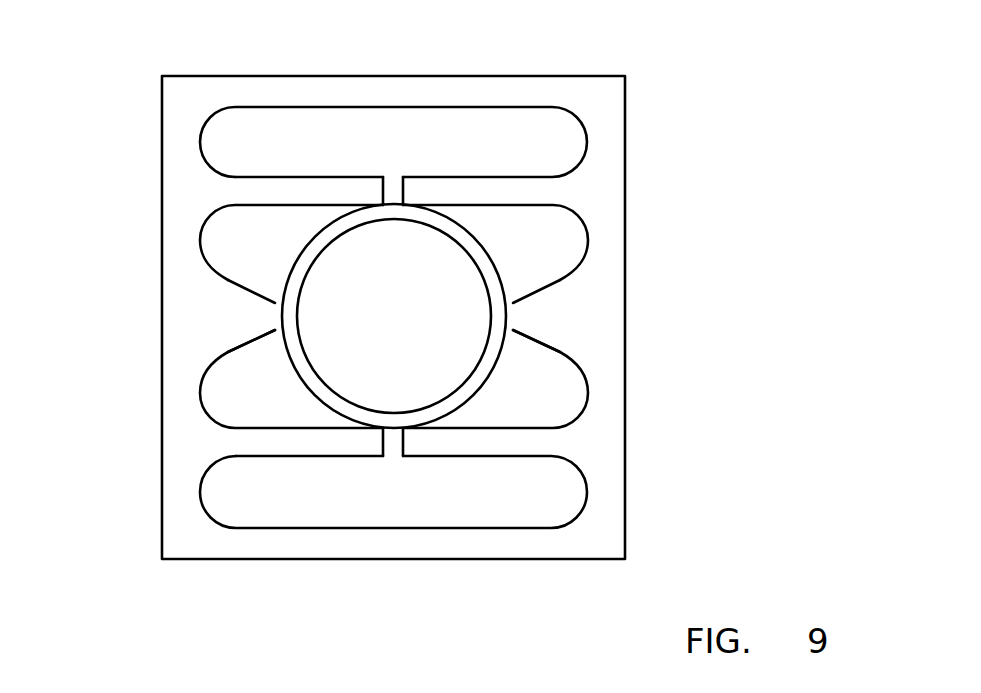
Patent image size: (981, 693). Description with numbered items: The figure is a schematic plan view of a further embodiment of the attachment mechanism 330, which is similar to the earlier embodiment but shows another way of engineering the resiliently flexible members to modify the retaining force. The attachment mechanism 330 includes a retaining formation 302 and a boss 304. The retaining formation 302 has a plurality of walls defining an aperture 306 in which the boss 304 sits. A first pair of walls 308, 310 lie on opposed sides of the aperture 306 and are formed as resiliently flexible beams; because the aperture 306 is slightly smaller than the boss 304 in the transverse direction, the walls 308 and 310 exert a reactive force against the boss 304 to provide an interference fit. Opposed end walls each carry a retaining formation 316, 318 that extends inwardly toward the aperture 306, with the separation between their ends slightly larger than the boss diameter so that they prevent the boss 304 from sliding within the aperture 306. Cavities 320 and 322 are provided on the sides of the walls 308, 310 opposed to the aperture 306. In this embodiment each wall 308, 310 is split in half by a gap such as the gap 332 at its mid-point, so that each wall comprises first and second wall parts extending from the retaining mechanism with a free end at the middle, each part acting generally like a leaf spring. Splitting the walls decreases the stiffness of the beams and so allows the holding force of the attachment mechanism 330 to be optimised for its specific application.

The retaining formation 302 is at (627, 438).
The boss 304 is at (490, 281).
The aperture 306 is at (568, 228).
The wall 308 is at (295, 193).
The wall 310 is at (294, 443).
The retaining formation 316 is at (253, 317).
The retaining formation 318 is at (528, 316).
The cavity 320 is at (500, 140).
The cavity 322 is at (388, 460).
The attachment mechanism 330 is at (688, 137).
The gap 332 is at (391, 167).